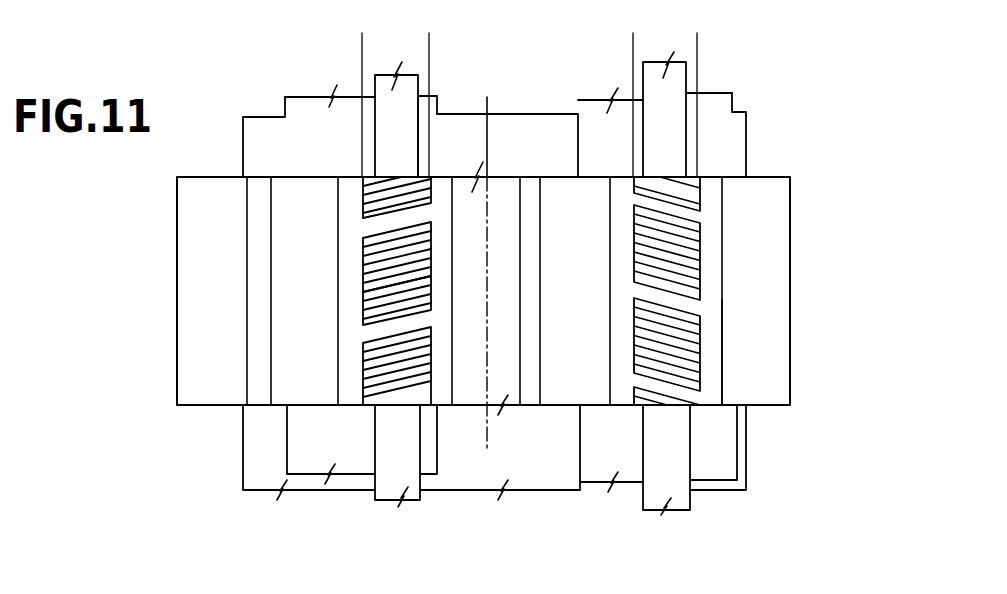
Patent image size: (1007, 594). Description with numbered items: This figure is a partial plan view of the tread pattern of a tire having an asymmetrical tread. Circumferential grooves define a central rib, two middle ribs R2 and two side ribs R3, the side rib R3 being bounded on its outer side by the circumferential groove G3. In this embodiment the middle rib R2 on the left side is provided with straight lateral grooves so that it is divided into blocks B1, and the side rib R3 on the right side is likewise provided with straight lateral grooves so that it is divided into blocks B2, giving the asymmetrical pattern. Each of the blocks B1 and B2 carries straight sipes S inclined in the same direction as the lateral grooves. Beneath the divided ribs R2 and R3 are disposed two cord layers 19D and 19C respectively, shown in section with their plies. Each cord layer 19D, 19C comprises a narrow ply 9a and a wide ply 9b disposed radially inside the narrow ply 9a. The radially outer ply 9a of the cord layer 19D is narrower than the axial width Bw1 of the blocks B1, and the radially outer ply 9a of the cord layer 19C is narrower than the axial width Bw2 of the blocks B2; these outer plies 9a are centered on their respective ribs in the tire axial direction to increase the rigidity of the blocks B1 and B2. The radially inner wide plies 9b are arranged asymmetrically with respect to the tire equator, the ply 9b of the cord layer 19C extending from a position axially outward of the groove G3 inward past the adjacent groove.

The cord layer 19D is at (200, 17).
The cord layer 19C is at (852, 30).
The narrow ply 9a is at (373, 82).
The wide ply 9b is at (313, 97).
The axial width of the blocks B1 Bw1 is at (450, 41).
The axial width of the blocks B2 Bw2 is at (725, 39).
The blocks B1 is at (430, 231).
The blocks B2 is at (633, 212).
The sipes S is at (376, 304).
The circumferential groove G3 is at (712, 368).
The middle rib R2 is at (404, 408).
The side rib R3 is at (684, 407).